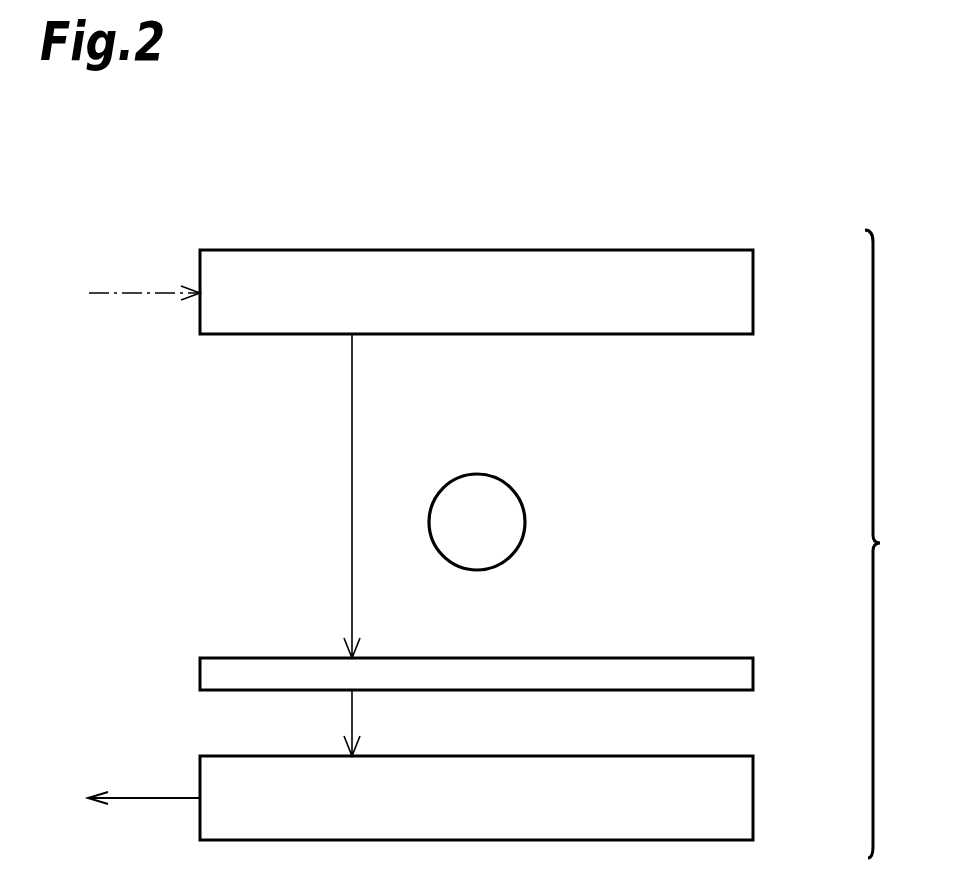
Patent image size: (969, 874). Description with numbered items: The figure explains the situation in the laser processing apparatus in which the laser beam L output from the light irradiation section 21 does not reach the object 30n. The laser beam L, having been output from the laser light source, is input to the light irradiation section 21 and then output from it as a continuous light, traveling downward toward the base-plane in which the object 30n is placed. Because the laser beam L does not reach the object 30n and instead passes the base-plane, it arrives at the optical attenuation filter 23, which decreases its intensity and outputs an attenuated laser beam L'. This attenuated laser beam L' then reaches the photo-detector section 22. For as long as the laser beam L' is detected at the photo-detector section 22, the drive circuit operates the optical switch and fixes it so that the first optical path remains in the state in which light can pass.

The light irradiation section 21 is at (753, 293).
The photo-detector section 22 is at (753, 795).
The optical attenuation filter 23 is at (753, 676).
The object 30n is at (521, 497).
The laser beam L is at (224, 433).
The attenuated laser beam L' is at (322, 723).